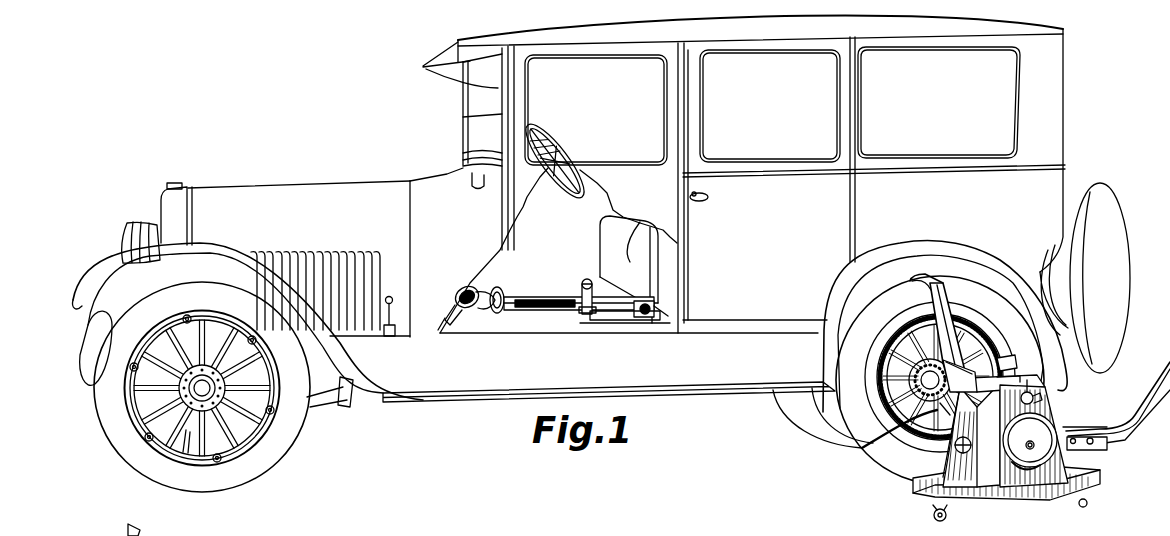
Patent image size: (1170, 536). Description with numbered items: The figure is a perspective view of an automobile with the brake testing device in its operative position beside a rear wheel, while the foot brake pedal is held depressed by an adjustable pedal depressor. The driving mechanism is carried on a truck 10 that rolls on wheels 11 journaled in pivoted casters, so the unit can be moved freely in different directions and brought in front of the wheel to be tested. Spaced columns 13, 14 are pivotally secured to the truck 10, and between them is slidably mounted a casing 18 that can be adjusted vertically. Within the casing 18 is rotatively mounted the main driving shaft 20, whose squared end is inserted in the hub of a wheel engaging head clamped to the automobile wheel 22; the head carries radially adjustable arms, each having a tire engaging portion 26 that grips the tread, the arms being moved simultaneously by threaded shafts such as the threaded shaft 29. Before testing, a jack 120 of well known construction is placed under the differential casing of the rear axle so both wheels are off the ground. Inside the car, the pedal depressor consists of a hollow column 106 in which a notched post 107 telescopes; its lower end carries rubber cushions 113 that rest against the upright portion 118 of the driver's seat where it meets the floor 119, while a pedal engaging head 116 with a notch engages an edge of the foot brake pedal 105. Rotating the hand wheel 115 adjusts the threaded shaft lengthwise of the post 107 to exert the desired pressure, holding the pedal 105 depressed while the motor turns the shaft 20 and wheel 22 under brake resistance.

The truck 10 is at (1013, 453).
The wheels 11 is at (934, 516).
The column 13 is at (920, 450).
The column 14 is at (1080, 418).
The casing 18 is at (1007, 357).
The main driving shaft 20 is at (1040, 407).
The automobile wheel 22 is at (843, 407).
The tire engaging portion 26 is at (943, 283).
The threaded shaft 29 is at (957, 328).
The foot brake pedal 105 is at (482, 290).
The hollow column 106 is at (612, 298).
The post 107 is at (542, 297).
The rubber cushions 113 is at (660, 318).
The hand wheel 115 is at (500, 314).
The pedal engaging head 116 is at (485, 312).
The upright portion of the driver's seat 118 is at (627, 258).
The floor 119 is at (613, 322).
The jack 120 is at (1136, 417).